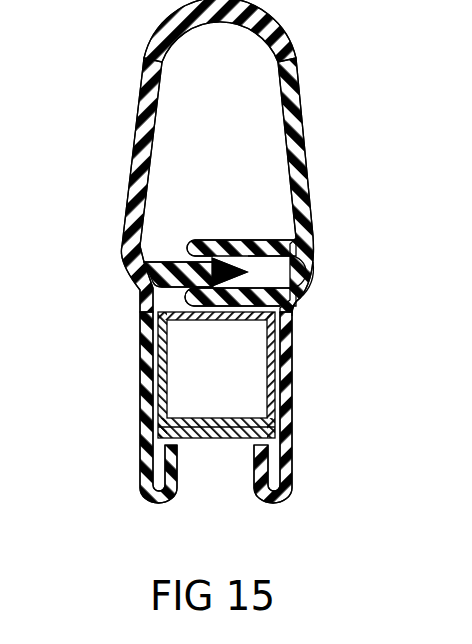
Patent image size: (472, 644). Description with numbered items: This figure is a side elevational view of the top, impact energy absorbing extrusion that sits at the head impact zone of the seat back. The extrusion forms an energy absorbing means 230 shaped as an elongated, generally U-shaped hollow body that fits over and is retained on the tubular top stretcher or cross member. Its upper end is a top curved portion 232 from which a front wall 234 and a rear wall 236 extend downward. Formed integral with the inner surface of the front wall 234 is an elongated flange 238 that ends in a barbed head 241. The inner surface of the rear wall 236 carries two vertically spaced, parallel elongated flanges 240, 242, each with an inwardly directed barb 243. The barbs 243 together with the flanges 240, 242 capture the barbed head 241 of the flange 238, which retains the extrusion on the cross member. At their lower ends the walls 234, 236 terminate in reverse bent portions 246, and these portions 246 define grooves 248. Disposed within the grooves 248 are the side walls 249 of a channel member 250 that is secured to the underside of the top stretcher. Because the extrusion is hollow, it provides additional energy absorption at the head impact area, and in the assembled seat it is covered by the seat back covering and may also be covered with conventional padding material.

The energy absorbing means 230 is at (221, 156).
The top curved portion 232 is at (292, 43).
The front wall 234 is at (137, 145).
The rear wall 236 is at (310, 133).
The elongated flange 238 is at (160, 278).
The elongated flange 240 is at (258, 240).
The barbed head 241 is at (228, 262).
The elongated flange 242 is at (312, 286).
The inwardly directed barb 243 is at (197, 298).
The reverse bent portion 246 is at (185, 493).
The groove 248 is at (160, 470).
The side wall 249 is at (279, 461).
The channel member 250 is at (216, 443).